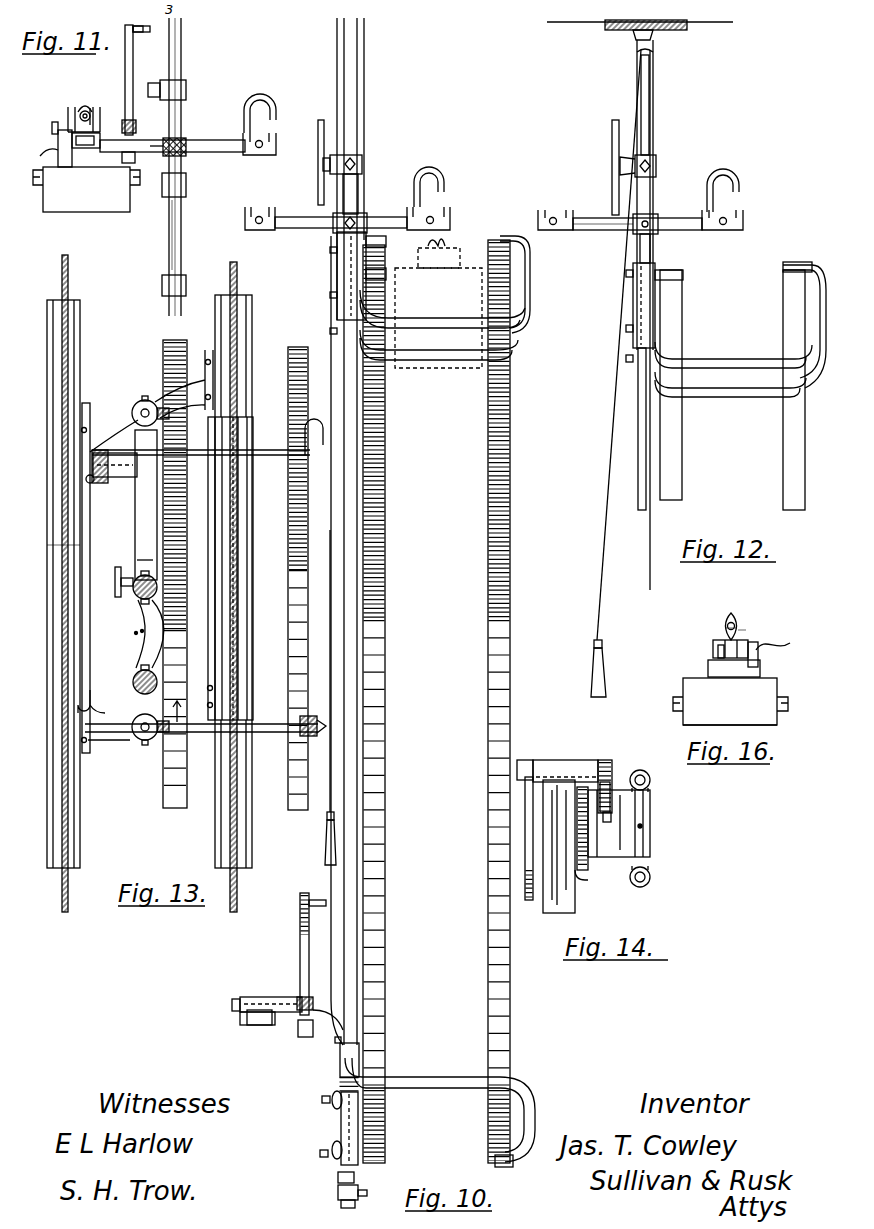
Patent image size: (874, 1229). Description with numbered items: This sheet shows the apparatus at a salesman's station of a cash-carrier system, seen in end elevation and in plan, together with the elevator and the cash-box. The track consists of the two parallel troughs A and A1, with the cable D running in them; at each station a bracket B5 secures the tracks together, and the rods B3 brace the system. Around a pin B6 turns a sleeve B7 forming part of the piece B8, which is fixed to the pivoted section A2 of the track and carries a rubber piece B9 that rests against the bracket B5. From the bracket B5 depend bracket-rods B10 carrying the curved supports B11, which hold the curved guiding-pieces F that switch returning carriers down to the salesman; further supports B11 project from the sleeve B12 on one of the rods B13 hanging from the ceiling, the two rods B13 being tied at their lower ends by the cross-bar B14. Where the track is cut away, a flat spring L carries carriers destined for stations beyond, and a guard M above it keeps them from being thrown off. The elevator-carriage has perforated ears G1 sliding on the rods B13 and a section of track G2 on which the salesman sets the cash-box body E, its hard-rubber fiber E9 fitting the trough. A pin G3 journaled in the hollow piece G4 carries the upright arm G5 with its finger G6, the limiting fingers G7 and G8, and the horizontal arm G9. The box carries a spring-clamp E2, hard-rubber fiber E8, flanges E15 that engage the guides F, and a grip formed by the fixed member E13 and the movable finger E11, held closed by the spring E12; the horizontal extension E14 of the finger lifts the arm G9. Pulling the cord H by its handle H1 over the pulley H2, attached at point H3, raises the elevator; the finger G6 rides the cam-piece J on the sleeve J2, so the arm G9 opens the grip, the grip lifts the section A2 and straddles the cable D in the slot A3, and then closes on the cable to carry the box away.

In FIG. 11, the trough A is at (273, 152).
In FIG. 13, the trough A is at (252, 331).
In FIG. 10, the trough A is at (450, 221).
In FIG. 12, the trough A is at (743, 222).
In FIG. 16, the trough A is at (718, 655).
In FIG. 13, the trough A1 is at (47, 396).
In FIG. 11, the pivoted section A2 is at (68, 110).
In FIG. 13, the pivoted section A2 is at (47, 548).
In FIG. 13, the slot A3 is at (57, 728).
In FIG. 12, the rods B3 is at (638, 483).
In FIG. 13, the bracket B5 is at (146, 505).
In FIG. 12, the bracket B5 is at (588, 218).
In FIG. 13, the pin B6 is at (96, 455).
In FIG. 13, the sleeve B7 is at (100, 482).
In FIG. 13, the piece B8 is at (128, 634).
In FIG. 13, the rubber piece B9 is at (92, 708).
In FIG. 13, the bracket-rods B10 is at (133, 412).
In FIG. 10, the bracket-rods B10 is at (360, 193).
In FIG. 12, the bracket-rods B10 is at (653, 252).
In FIG. 11, the curved supports B11 is at (169, 248).
In FIG. 13, the curved supports B11 is at (266, 450).
In FIG. 10, the curved supports B11 is at (428, 362).
In FIG. 12, the curved supports B11 is at (724, 386).
In FIG. 10, the sleeve B12 is at (340, 1110).
In FIG. 11, the rods or standards B13 is at (182, 48).
In FIG. 13, the rods or standards B13 is at (135, 598).
In FIG. 10, the rods or standards B13 is at (343, 89).
In FIG. 12, the rods or standards B13 is at (637, 45).
In FIG. 10, the cross-bar B14 is at (338, 1196).
In FIG. 11, the cable D is at (84, 98).
In FIG. 13, the cable D is at (240, 893).
In FIG. 10, the cable D is at (344, 209).
In FIG. 12, the cable D is at (637, 210).
In FIG. 16, the cable D is at (734, 616).
In FIG. 11, the body E is at (86, 189).
In FIG. 16, the body E is at (730, 701).
In FIG. 16, the spring-clamp E2 is at (776, 728).
In FIG. 16, the hard-rubber fiber E8 is at (712, 670).
In FIG. 16, the hard-rubber fiber E9 is at (720, 650).
In FIG. 11, the movable finger E11 is at (80, 106).
In FIG. 16, the movable finger E11 is at (740, 624).
In FIG. 11, the spring E12 is at (62, 166).
In FIG. 16, the spring E12 is at (759, 664).
In FIG. 11, the fixed member E13 is at (92, 108).
In FIG. 16, the fixed member E13 is at (724, 625).
In FIG. 11, the horizontal extension E14 is at (40, 147).
In FIG. 16, the horizontal extension E14 is at (784, 641).
In FIG. 11, the flanges E15 is at (86, 190).
In FIG. 16, the flanges E15 is at (737, 697).
In FIG. 13, the curved guiding-pieces F is at (288, 557).
In FIG. 10, the curved guiding-pieces F is at (436, 701).
In FIG. 12, the curved guiding-pieces F is at (783, 462).
In FIG. 11, the perforated ears G1 is at (186, 186).
In FIG. 10, the perforated ears G1 is at (360, 1060).
In FIG. 14, the perforated ears G1 is at (650, 780).
In FIG. 11, the section of track G2 is at (58, 152).
In FIG. 10, the section of track G2 is at (255, 1025).
In FIG. 14, the section of track G2 is at (560, 910).
In FIG. 14, the pin G3 is at (606, 753).
In FIG. 10, the hollow piece G4 is at (272, 994).
In FIG. 14, the hollow piece G4 is at (560, 762).
In FIG. 11, the upright arm G5 is at (125, 55).
In FIG. 10, the upright arm G5 is at (300, 953).
In FIG. 11, the right-angle finger G6 is at (169, 44).
In FIG. 10, the right-angle finger G6 is at (318, 892).
In FIG. 14, the right-angle finger G6 is at (611, 780).
In FIG. 11, the finger G7 is at (125, 120).
In FIG. 10, the finger G7 is at (310, 1002).
In FIG. 14, the finger G7 is at (606, 822).
In FIG. 11, the finger G8 is at (135, 160).
In FIG. 10, the finger G8 is at (320, 1036).
In FIG. 11, the horizontal arm G9 is at (52, 127).
In FIG. 10, the horizontal arm G9 is at (232, 1004).
In FIG. 14, the horizontal arm G9 is at (529, 900).
In FIG. 13, the cord H is at (137, 640).
In FIG. 10, the cord H is at (358, 940).
In FIG. 12, the cord H is at (636, 101).
In FIG. 13, the handle H1 is at (325, 855).
In FIG. 12, the handle H1 is at (605, 668).
In FIG. 12, the pulley H2 is at (657, 50).
In FIG. 10, the point H3 is at (335, 1048).
In FIG. 14, the point H3 is at (645, 828).
In FIG. 11, the cam-piece J is at (150, 29).
In FIG. 13, the cam-piece J is at (115, 584).
In FIG. 10, the cam-piece J is at (318, 160).
In FIG. 12, the cam-piece J is at (612, 129).
In FIG. 11, the sleeve J2 is at (186, 84).
In FIG. 13, the sleeve J2 is at (144, 566).
In FIG. 10, the sleeve J2 is at (363, 163).
In FIG. 12, the sleeve J2 is at (657, 165).
In FIG. 11, the flat spring L is at (259, 153).
In FIG. 13, the flat spring L is at (212, 553).
In FIG. 10, the flat spring L is at (412, 232).
In FIG. 12, the flat spring L is at (726, 232).
In FIG. 11, the guard M is at (256, 99).
In FIG. 10, the guard M is at (428, 176).
In FIG. 12, the guard M is at (722, 176).